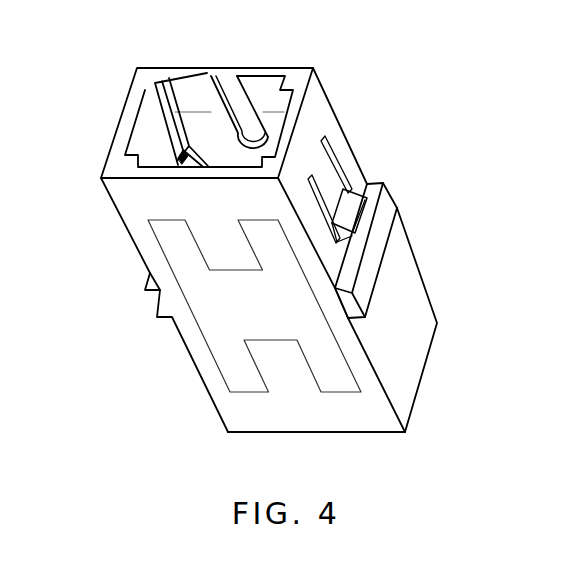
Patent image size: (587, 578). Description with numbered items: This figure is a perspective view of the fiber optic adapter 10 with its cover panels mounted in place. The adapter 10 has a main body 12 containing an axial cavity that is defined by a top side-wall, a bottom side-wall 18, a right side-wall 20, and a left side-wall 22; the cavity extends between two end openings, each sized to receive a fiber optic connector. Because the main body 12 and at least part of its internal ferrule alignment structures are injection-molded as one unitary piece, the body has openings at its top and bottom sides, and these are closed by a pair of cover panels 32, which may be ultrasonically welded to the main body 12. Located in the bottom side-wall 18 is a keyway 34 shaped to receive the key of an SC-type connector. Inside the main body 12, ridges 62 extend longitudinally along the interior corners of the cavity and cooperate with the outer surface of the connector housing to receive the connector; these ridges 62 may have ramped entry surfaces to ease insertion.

The fiber optic adapter 10 is at (455, 211).
The main body 12 is at (410, 365).
The bottom side-wall 18 is at (370, 422).
The right side-wall 20 is at (420, 315).
The left side-wall 22 is at (122, 135).
The cover panels 32 is at (247, 302).
The keyway 34 is at (238, 108).
The ridges 62 is at (155, 108).